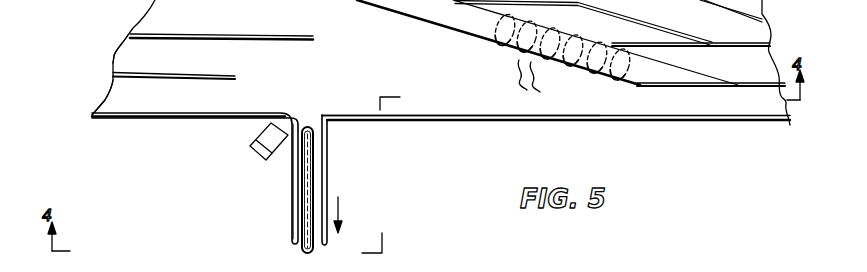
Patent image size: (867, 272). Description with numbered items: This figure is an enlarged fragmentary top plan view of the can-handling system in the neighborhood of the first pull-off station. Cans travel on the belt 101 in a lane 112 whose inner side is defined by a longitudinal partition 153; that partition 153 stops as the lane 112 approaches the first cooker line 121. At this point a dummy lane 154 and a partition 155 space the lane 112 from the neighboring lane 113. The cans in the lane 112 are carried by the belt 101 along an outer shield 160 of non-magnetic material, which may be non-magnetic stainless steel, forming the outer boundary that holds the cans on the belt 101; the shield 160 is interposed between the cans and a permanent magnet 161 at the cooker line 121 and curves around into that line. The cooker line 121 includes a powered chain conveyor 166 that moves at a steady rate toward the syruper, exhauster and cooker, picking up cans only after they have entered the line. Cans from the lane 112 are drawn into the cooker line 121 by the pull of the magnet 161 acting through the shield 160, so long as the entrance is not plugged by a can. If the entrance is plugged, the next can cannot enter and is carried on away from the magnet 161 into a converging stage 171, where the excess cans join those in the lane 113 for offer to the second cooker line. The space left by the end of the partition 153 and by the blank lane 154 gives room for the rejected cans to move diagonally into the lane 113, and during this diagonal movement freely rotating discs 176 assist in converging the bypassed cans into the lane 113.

The belt 101 is at (396, 65).
The lane 112 is at (106, 93).
The lane 113 is at (600, 108).
The first cooker line 121 is at (297, 205).
The longitudinal partition 153 is at (148, 63).
The dummy lane 154 is at (123, 52).
The partition 155 is at (167, 35).
The outer shield 160 is at (202, 112).
The permanent magnet 161 is at (252, 146).
The powered chain conveyor 166 is at (312, 177).
The converging stage 171 is at (462, 85).
The freely rotating discs 176 is at (561, 53).